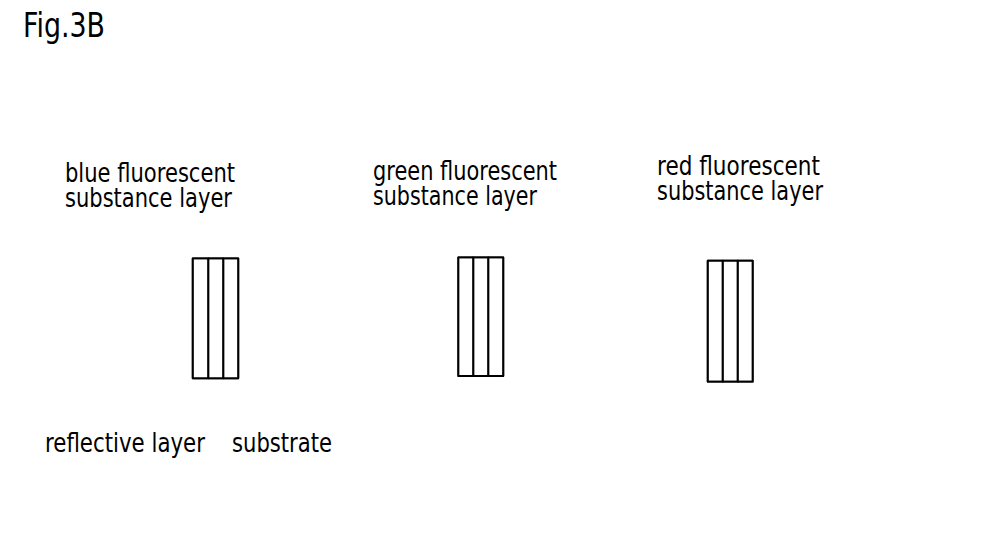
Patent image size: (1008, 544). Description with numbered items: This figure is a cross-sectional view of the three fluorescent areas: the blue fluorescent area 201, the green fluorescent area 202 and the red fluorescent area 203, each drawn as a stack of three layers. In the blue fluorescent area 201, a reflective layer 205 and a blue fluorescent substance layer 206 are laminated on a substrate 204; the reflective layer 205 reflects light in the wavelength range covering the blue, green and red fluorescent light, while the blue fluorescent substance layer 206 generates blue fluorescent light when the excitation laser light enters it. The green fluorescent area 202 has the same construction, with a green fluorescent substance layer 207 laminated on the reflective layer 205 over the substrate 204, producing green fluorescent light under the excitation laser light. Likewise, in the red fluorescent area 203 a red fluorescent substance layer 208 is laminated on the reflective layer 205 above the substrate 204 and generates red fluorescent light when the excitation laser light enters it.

The blue fluorescent area 201 is at (212, 385).
The green fluorescent area 202 is at (490, 385).
The red fluorescent area 203 is at (735, 387).
The substrate 204 is at (232, 372).
The reflective layer 205 is at (215, 372).
The blue fluorescent substance layer 206 is at (201, 264).
The green fluorescent substance layer 207 is at (466, 266).
The red fluorescent substance layer 208 is at (713, 268).